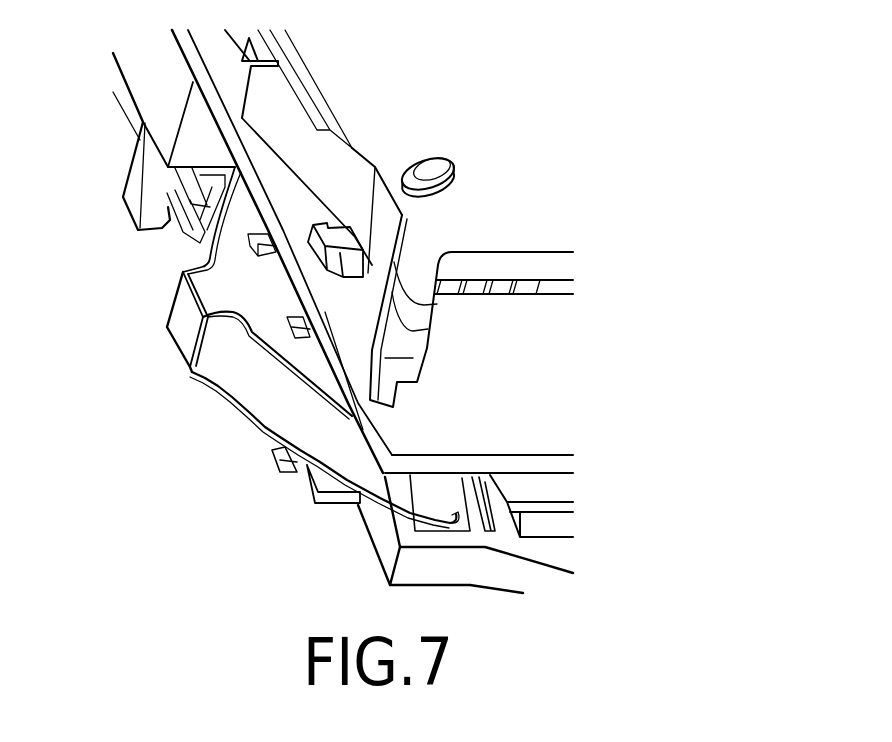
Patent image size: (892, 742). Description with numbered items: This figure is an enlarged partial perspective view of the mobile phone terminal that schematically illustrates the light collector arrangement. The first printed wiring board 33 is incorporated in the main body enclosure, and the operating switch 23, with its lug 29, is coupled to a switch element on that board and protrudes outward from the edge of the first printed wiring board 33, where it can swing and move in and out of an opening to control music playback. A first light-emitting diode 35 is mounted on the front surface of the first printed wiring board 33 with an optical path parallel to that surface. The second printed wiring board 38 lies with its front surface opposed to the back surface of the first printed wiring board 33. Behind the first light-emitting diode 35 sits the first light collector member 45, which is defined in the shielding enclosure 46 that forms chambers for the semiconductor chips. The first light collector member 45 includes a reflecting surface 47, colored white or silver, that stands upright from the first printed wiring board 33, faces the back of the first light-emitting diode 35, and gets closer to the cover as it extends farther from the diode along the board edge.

The operating switch 23 is at (228, 452).
The lug 29 is at (178, 318).
The first printed wiring board 33 is at (383, 492).
The first light-emitting diode 35 is at (348, 243).
The second printed wiring board 38 is at (279, 472).
The first light collector member 45 is at (425, 352).
The shielding enclosure 46 is at (540, 270).
The reflecting surface 47 is at (352, 146).